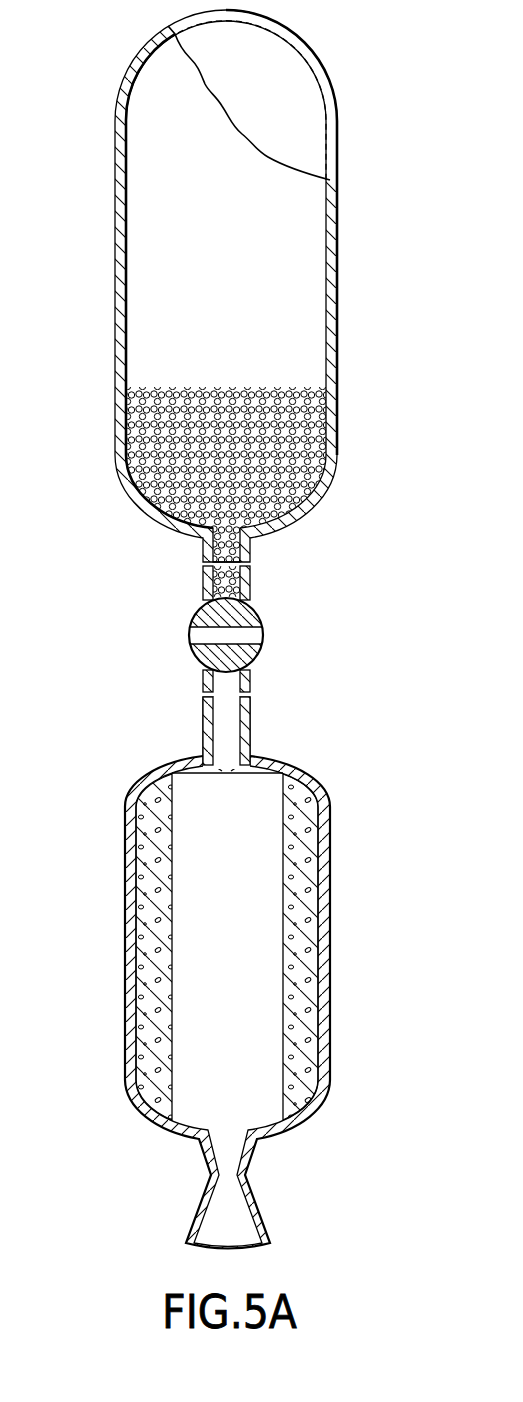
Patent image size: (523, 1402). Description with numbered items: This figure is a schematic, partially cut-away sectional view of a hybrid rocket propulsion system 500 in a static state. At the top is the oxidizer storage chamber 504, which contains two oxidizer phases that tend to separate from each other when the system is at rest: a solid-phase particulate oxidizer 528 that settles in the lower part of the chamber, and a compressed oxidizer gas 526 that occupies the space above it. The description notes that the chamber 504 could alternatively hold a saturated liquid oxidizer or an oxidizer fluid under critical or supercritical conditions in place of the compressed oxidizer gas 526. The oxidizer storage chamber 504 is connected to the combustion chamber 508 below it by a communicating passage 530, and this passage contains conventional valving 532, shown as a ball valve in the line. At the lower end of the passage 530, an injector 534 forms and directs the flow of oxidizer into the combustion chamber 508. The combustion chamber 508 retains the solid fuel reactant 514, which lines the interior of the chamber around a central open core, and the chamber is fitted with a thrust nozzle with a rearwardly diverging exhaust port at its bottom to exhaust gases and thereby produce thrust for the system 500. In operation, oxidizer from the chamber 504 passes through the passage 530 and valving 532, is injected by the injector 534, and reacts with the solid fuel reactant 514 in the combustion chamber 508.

The hybrid rocket propulsion system 500 is at (103, 65).
The oxidizer storage chamber 504 is at (118, 138).
The compressed oxidizer gas 526 is at (134, 181).
The solid-phase particulate oxidizer 528 is at (128, 405).
The valving 532 is at (250, 614).
The communicating passage 530 is at (205, 716).
The injector 534 is at (233, 770).
The combustion chamber 508 is at (178, 760).
The solid fuel reactant 514 is at (140, 815).